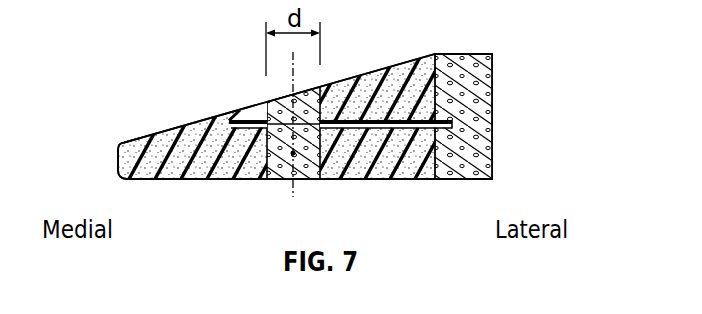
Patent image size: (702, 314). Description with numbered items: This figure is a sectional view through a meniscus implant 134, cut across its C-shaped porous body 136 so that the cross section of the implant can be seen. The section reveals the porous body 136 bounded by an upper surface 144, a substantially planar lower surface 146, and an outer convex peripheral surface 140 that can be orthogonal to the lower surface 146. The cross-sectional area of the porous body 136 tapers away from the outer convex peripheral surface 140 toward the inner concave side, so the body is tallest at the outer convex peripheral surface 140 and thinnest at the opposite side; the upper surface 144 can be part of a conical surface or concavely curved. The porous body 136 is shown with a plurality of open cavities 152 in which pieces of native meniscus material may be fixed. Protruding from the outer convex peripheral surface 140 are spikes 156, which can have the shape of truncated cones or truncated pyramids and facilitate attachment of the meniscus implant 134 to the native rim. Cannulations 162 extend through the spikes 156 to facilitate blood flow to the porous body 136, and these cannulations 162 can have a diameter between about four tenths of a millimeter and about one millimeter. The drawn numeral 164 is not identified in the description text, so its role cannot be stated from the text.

The meniscus implant 134 is at (169, 44).
The porous body 136 is at (223, 111).
The outer convex peripheral surface 140 is at (494, 103).
The upper surface 144 is at (172, 130).
The lower surface 146 is at (255, 179).
The open cavities 152 is at (268, 100).
The spikes 156 is at (492, 82).
The cannulations 162 is at (412, 128).
The medial body portion 164 is at (180, 179).